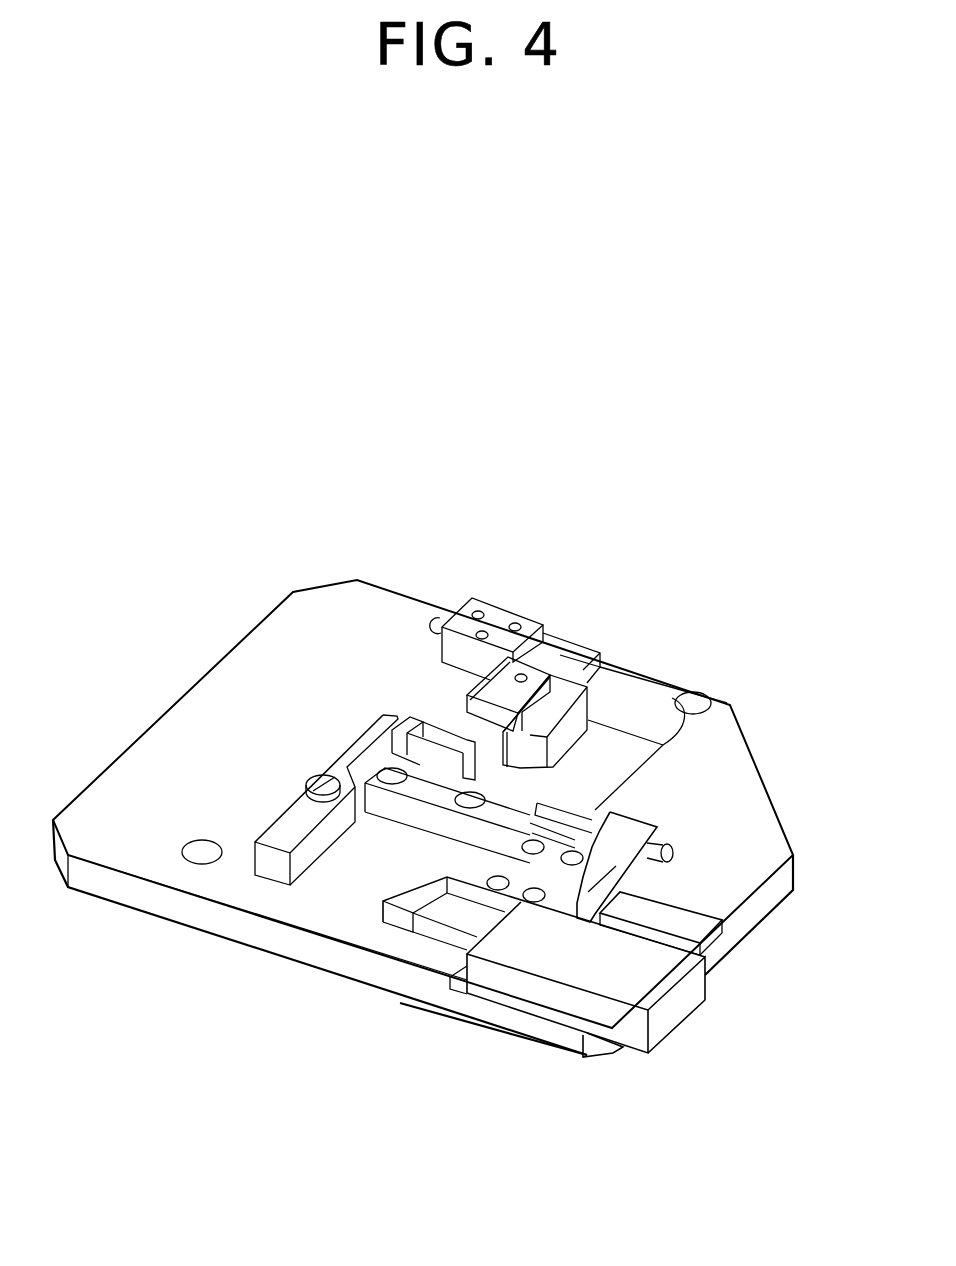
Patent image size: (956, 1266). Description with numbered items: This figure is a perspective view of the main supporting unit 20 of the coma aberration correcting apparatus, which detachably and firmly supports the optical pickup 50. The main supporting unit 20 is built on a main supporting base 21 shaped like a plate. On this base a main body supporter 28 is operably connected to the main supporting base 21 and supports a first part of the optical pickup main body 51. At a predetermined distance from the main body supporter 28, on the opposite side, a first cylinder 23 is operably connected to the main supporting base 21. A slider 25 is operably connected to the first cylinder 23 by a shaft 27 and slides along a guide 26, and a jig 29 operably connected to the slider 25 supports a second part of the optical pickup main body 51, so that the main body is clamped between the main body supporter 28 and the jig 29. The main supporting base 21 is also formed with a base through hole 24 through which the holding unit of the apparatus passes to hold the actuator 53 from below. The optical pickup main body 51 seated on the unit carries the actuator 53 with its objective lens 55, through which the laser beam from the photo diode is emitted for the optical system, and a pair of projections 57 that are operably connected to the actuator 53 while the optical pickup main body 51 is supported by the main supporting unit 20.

The main supporting unit 20 is at (156, 686).
The main supporting base 21 is at (158, 870).
The first cylinder 23 is at (510, 953).
The base through hole 24 is at (606, 753).
The slider 25 is at (405, 915).
The guide 26 is at (692, 927).
The shaft 27 is at (455, 933).
The main body supporter 28 is at (270, 868).
The jig 29 is at (393, 813).
The optical pickup 50 is at (590, 507).
The optical pickup main body 51 is at (425, 713).
The actuator 53 is at (520, 674).
The objective lens 55 is at (528, 657).
The projections 57 is at (468, 698).